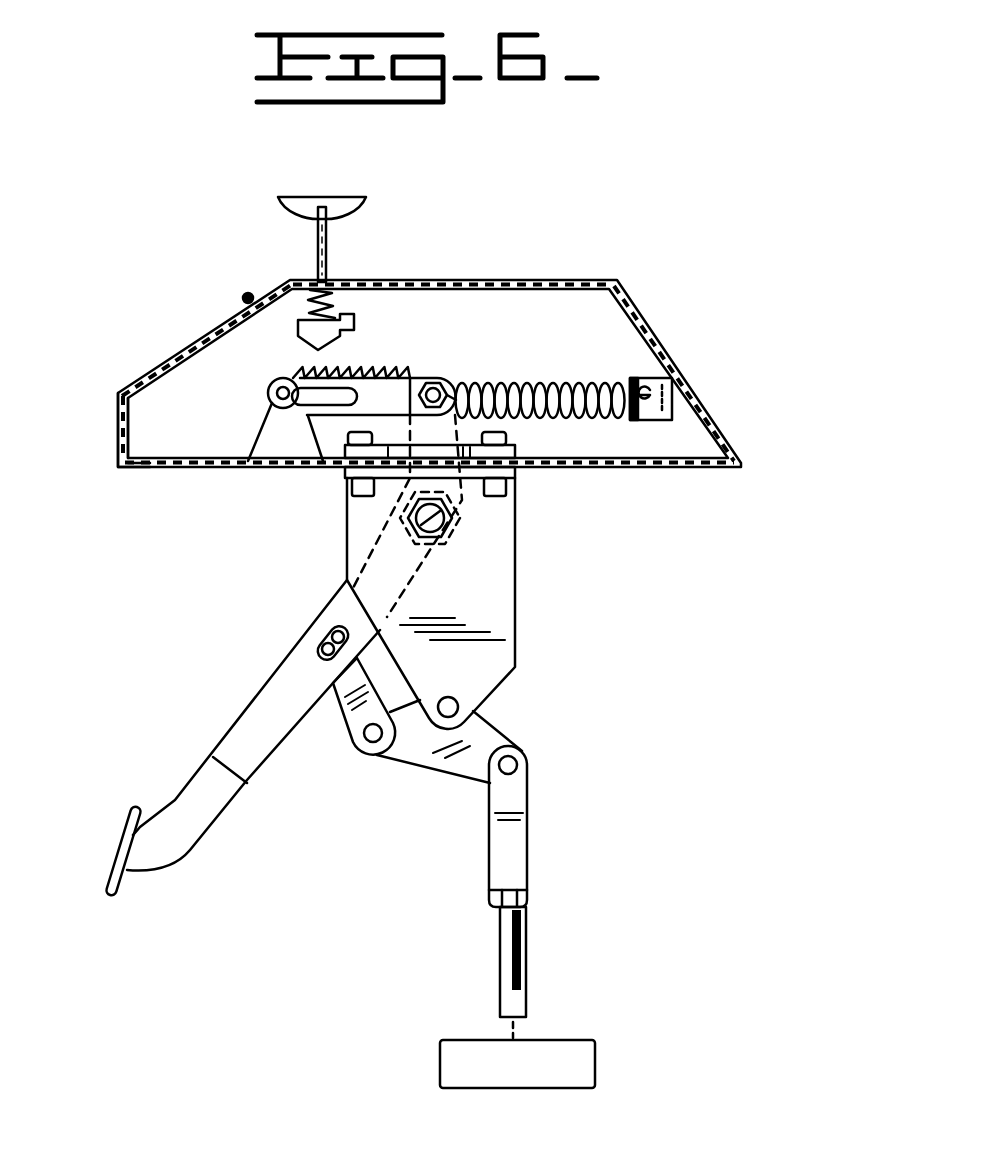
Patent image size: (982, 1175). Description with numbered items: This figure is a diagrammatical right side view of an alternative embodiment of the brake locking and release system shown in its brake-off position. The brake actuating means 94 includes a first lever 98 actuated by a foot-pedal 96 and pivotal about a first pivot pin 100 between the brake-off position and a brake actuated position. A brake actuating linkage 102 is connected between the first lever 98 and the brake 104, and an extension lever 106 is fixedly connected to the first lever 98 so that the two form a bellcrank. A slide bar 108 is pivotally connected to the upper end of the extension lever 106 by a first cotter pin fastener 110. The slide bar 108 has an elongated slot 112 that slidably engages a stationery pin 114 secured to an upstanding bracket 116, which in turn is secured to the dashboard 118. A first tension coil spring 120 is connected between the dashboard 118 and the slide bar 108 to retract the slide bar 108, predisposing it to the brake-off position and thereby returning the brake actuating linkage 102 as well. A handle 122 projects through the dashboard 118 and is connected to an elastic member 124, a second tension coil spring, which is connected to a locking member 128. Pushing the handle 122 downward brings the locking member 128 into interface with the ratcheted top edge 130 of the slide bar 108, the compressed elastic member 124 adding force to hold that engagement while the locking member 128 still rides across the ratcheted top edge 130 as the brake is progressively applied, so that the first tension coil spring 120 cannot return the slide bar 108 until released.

The brake actuating means 94 is at (393, 852).
The foot-pedal 96 is at (125, 848).
The first lever 98 is at (258, 712).
The first pivot pin 100 is at (462, 526).
The brake actuating linkage 102 is at (578, 775).
The brake 104 is at (517, 1064).
The extension lever 106 is at (455, 425).
The slide bar 108 is at (405, 370).
The first cotter pin fastener 110 is at (443, 380).
The elongated slot 112 is at (283, 378).
The stationery pin 114 is at (268, 397).
The upstanding bracket 116 is at (265, 445).
The dashboard 118 is at (122, 390).
The first tension coil spring 120 is at (593, 378).
The handle 122 is at (322, 195).
The elastic member 124 is at (350, 290).
The locking member 128 is at (355, 328).
The ratcheted top edge 130 is at (413, 377).